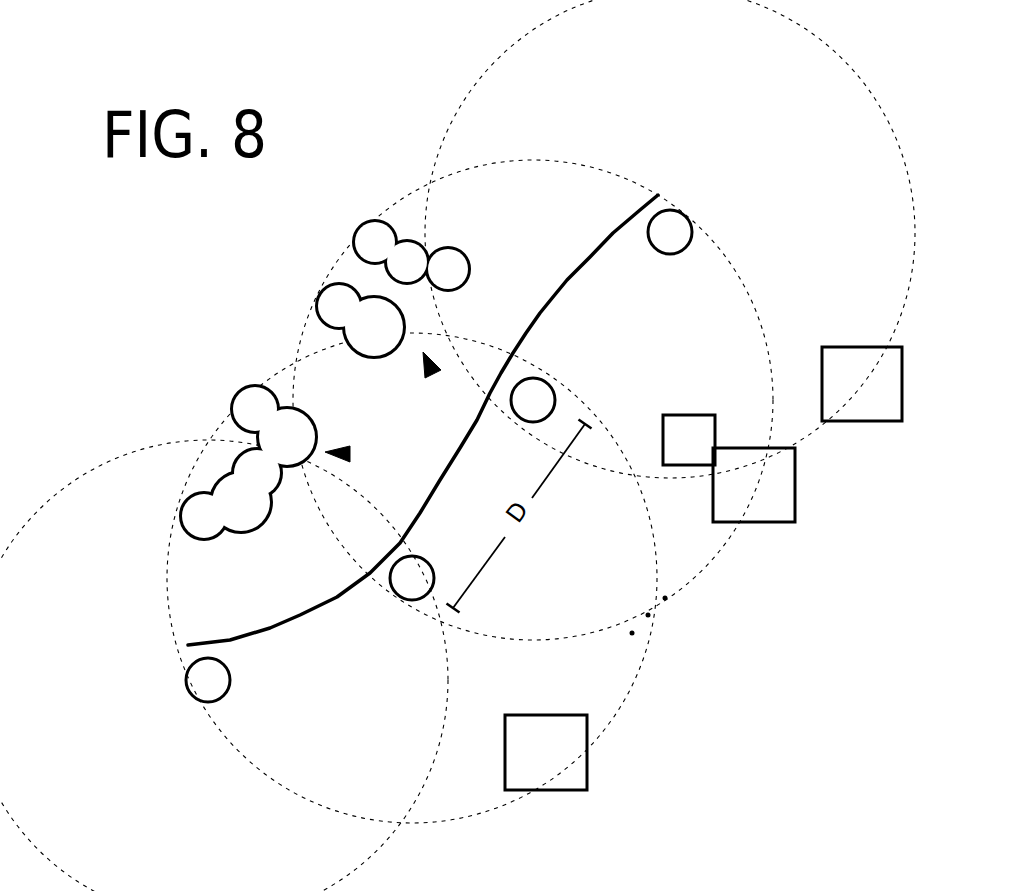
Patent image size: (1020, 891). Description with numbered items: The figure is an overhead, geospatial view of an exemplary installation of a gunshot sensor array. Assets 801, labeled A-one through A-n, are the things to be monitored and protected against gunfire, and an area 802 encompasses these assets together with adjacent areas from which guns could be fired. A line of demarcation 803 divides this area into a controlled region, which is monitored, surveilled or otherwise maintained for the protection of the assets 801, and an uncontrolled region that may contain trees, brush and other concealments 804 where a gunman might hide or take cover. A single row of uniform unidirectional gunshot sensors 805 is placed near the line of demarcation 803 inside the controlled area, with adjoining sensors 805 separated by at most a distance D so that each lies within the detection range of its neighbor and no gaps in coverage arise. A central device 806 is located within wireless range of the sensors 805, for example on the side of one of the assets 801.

The assets 801 is at (867, 421).
The area 802 is at (128, 320).
The line of demarcation 803 is at (600, 236).
The concealments 804 is at (350, 455).
The gunshot sensors 805 is at (652, 252).
The central device 806 is at (678, 416).